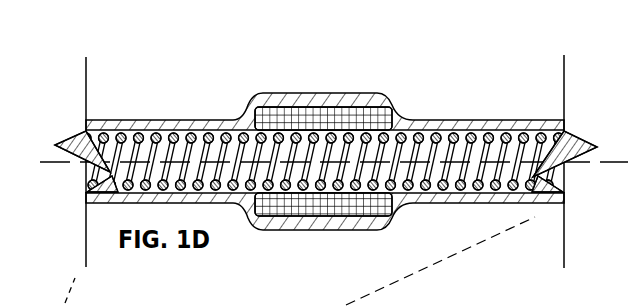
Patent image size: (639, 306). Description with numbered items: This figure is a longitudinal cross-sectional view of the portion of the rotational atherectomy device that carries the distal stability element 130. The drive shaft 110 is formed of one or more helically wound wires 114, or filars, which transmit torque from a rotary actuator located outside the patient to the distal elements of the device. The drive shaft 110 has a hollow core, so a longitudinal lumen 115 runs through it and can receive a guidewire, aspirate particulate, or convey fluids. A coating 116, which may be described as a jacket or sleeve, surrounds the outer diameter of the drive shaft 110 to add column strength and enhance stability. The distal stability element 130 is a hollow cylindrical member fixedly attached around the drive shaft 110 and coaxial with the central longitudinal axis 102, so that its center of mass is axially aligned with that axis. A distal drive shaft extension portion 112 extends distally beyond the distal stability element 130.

The central longitudinal axis 102 is at (52, 164).
The drive shaft 110 is at (166, 110).
The distal drive shaft extension portion 112 is at (500, 120).
The helically wound wires 114 is at (447, 129).
The longitudinal lumen 115 is at (82, 132).
The coating 116 is at (365, 93).
The distal stability element 130 is at (285, 218).